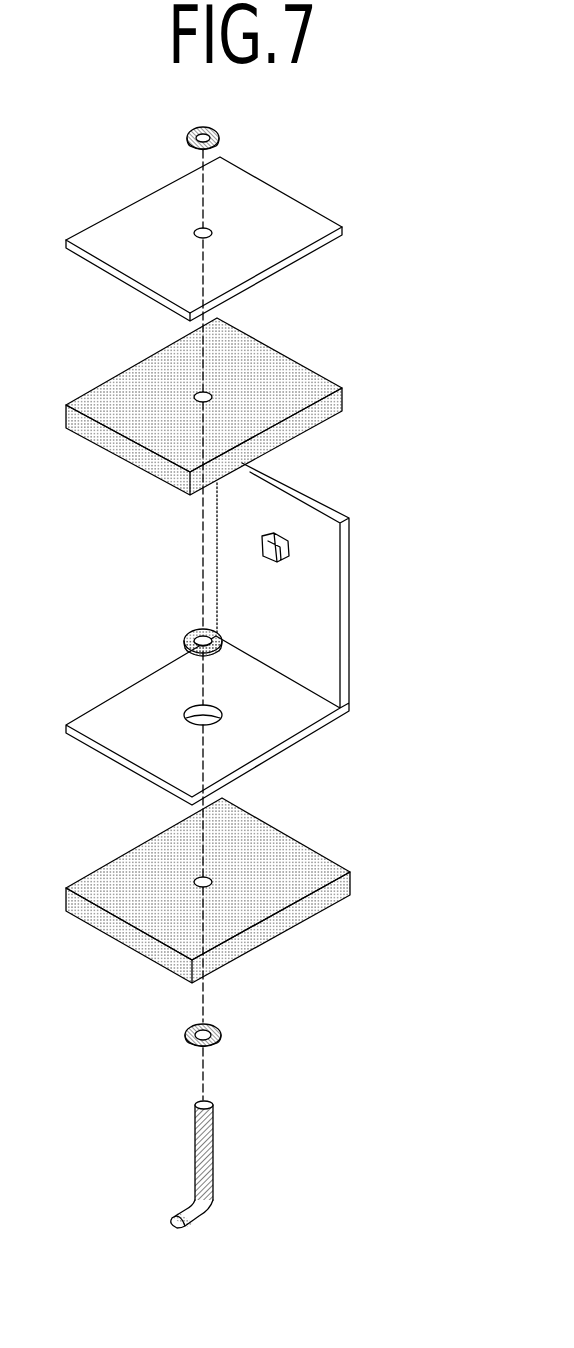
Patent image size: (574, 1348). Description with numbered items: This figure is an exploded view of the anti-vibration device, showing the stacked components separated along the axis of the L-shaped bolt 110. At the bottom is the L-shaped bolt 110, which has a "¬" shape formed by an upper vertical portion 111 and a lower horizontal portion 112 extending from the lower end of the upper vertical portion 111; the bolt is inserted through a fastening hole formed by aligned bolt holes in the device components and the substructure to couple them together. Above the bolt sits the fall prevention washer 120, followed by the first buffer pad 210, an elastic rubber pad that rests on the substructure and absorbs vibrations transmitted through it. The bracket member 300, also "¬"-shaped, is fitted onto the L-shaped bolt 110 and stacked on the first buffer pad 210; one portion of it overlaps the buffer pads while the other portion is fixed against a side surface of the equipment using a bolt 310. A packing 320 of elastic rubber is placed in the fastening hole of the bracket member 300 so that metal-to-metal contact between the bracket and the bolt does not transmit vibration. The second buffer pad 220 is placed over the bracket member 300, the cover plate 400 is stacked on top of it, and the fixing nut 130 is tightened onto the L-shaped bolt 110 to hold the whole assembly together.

The L-shaped bolt 110 is at (190, 1142).
The upper vertical portion 111 is at (193, 1155).
The lower horizontal portion 112 is at (210, 1212).
The fall prevention washer 120 is at (225, 1033).
The fixing nut 130 is at (219, 142).
The first buffer pad 210 is at (350, 878).
The second buffer pad 220 is at (342, 395).
The bracket member 300 is at (349, 615).
The bolt 310 is at (289, 549).
The packing 320 is at (183, 643).
The cover plate 400 is at (342, 227).